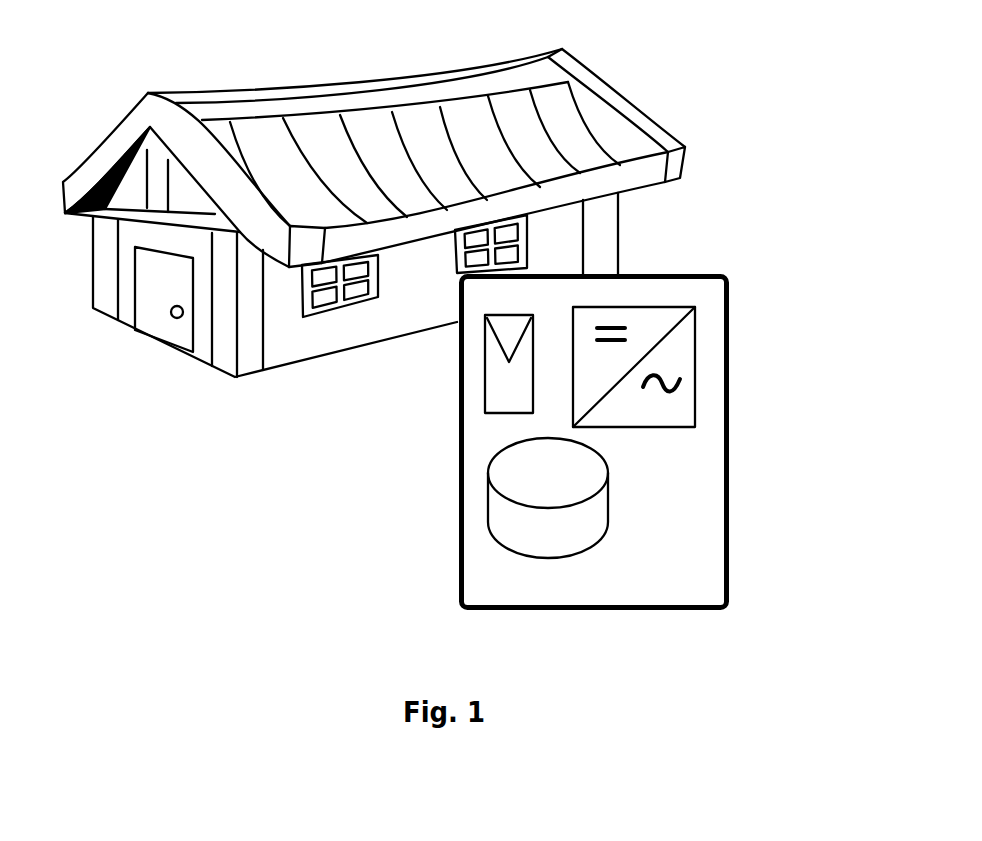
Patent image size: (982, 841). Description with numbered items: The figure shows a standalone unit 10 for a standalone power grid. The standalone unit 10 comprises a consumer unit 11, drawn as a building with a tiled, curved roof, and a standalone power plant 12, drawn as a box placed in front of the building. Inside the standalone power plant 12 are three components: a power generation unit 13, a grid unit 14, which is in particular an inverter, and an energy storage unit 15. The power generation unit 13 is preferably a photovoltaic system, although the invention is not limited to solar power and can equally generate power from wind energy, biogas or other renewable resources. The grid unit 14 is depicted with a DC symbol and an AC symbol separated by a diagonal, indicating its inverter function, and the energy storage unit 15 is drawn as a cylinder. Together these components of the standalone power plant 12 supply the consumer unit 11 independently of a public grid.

The energy supply system 10 is at (760, 193).
The consumer unit 11 is at (633, 82).
The standalone power plant 12 is at (729, 427).
The power generation unit 13 is at (485, 372).
The grid unit (inverter) 14 is at (697, 337).
The energy storage unit 15 is at (608, 498).